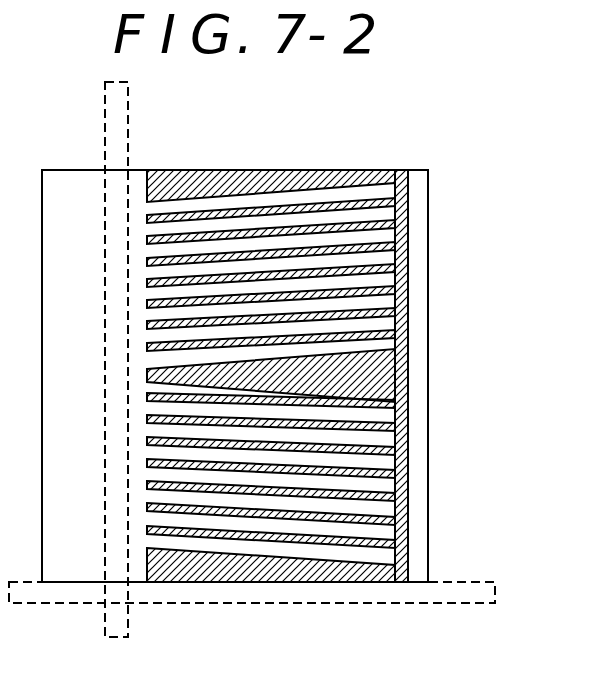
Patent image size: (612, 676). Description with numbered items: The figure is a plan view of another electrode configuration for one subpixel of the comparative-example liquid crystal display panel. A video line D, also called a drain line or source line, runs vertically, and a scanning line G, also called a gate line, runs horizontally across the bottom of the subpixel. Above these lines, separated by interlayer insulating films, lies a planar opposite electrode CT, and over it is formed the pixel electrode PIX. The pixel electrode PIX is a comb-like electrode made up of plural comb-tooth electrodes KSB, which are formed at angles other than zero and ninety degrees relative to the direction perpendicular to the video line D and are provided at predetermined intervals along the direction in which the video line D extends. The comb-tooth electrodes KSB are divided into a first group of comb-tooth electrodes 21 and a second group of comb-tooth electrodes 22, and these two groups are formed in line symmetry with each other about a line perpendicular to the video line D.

The video line D is at (115, 123).
The scanning line G is at (493, 591).
The opposite electrode CT is at (423, 217).
The pixel electrode PIX is at (410, 363).
The comb-tooth electrode KSB is at (408, 480).
The first group of comb-tooth electrodes 21 is at (410, 193).
The second group of comb-tooth electrodes 22 is at (410, 413).